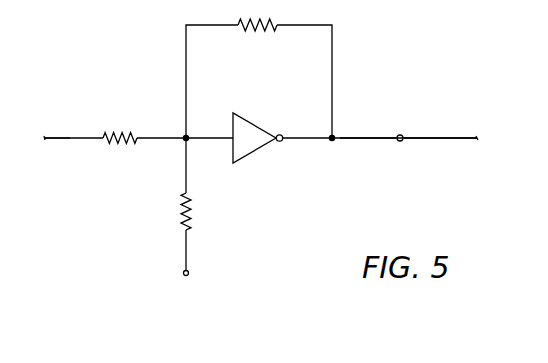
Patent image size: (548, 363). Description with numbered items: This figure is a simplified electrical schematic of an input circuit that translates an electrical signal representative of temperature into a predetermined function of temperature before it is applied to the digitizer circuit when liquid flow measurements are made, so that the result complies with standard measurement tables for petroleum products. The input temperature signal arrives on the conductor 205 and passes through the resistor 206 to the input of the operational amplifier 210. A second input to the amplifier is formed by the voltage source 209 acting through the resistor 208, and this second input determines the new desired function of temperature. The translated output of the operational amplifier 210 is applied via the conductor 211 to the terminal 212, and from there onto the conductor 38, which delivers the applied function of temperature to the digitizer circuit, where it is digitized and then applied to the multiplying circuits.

The conductor 205 is at (63, 137).
The resistor 206 is at (113, 164).
The resistor 208 is at (197, 214).
The voltage source 209 is at (200, 268).
The operational amplifier 210 is at (264, 146).
The conductor 211 is at (366, 137).
The terminal 212 is at (400, 142).
The conductor 38 is at (451, 137).